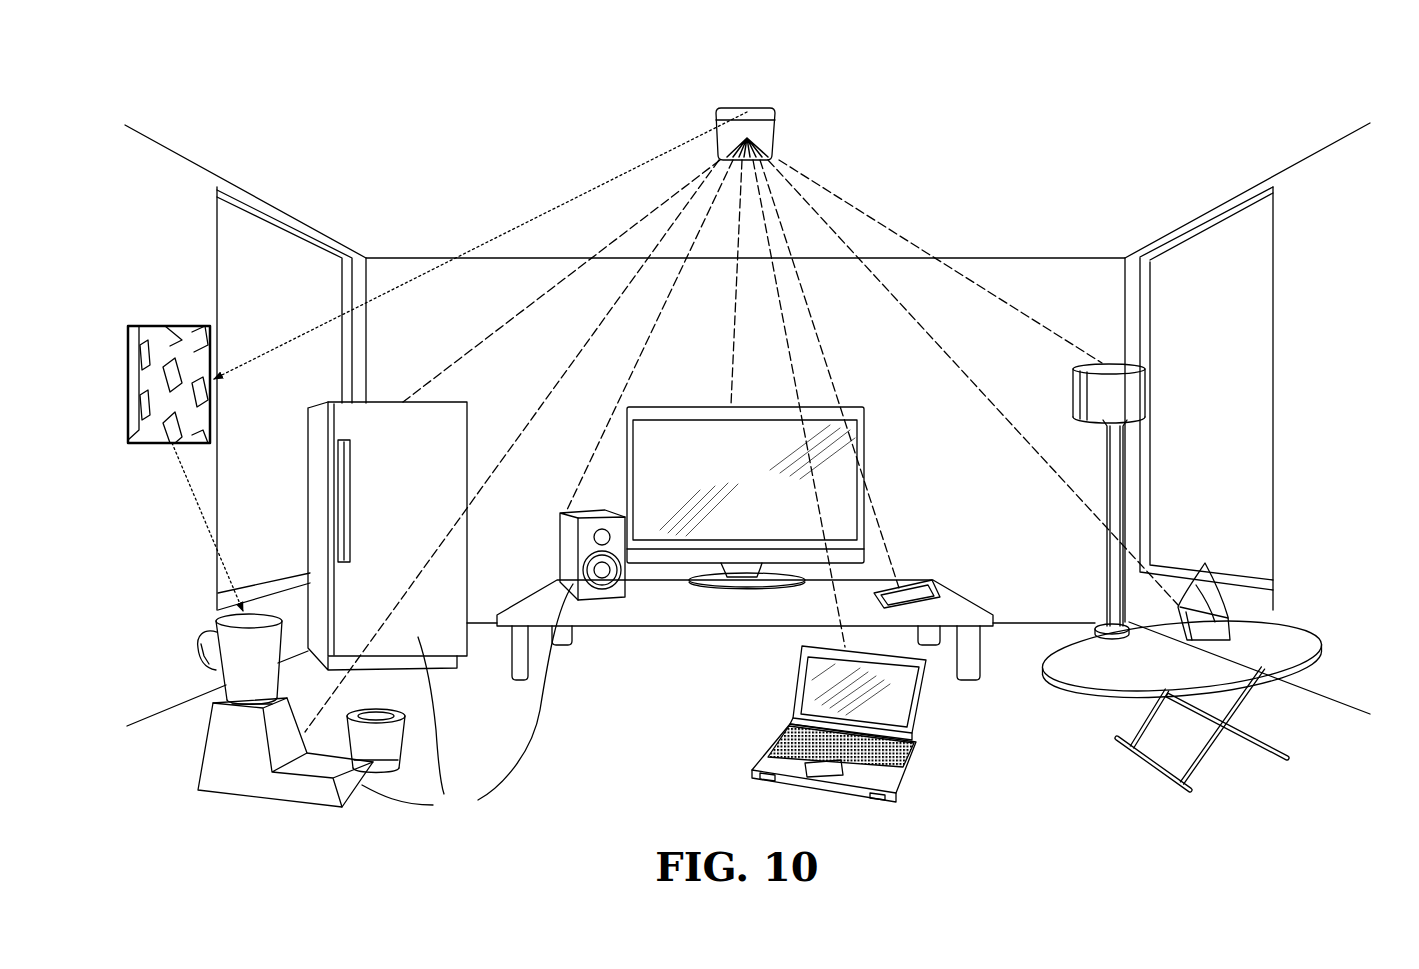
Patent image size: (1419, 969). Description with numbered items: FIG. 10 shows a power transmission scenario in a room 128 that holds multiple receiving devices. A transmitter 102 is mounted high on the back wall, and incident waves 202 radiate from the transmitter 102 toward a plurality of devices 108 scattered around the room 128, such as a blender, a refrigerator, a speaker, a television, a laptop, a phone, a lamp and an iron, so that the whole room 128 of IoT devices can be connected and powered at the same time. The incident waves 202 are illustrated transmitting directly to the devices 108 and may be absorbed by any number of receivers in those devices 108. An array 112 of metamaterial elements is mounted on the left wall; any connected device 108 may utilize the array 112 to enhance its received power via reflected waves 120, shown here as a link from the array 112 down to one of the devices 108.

The transmitter 102 is at (753, 125).
The incident waves 202 is at (558, 208).
The array 112 is at (153, 333).
The reflected waves 120 is at (190, 507).
The room 128 is at (1302, 229).
The devices 108 is at (467, 700).